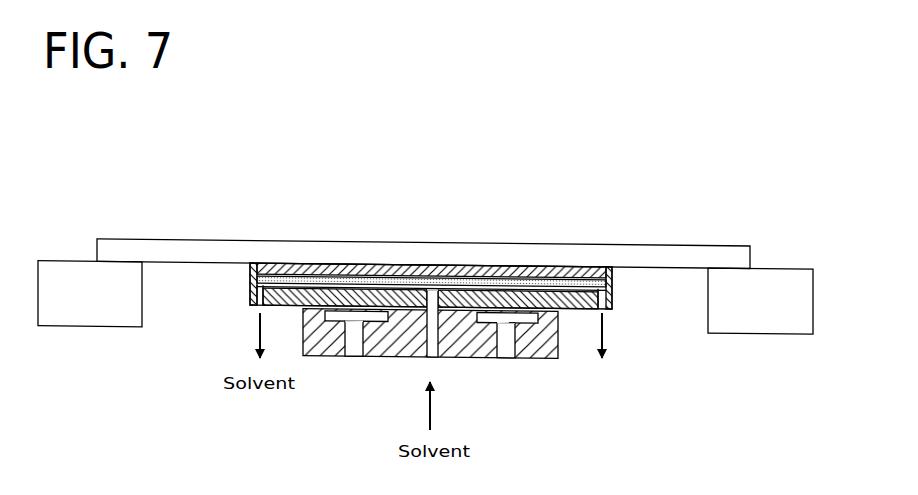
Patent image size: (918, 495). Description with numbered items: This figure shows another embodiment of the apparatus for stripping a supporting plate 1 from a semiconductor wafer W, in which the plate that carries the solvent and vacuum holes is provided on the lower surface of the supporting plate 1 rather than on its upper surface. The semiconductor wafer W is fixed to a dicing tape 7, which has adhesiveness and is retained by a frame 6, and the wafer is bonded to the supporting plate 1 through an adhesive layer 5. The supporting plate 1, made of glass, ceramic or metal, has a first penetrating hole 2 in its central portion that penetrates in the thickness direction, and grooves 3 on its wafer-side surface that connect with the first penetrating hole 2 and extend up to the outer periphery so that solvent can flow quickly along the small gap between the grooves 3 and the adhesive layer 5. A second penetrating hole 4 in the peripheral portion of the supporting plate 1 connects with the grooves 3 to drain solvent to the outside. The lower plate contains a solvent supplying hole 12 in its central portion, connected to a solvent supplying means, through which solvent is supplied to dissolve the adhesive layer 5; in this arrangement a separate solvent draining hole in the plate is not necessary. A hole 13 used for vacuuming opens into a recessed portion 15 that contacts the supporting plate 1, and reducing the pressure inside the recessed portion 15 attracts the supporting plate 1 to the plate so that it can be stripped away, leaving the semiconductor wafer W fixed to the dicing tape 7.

The supporting plate 1 is at (240, 292).
The first penetrating hole 2 is at (432, 292).
The grooves 3 is at (559, 292).
The second penetrating hole 4 is at (258, 263).
The adhesive layer 5 is at (460, 282).
The frame 6 is at (52, 312).
The dicing tape 7 is at (184, 248).
The first penetrating hole 12 is at (436, 357).
The hole 13 is at (355, 343).
The recessed portion 15 is at (519, 318).
The semiconductor wafer W is at (332, 265).